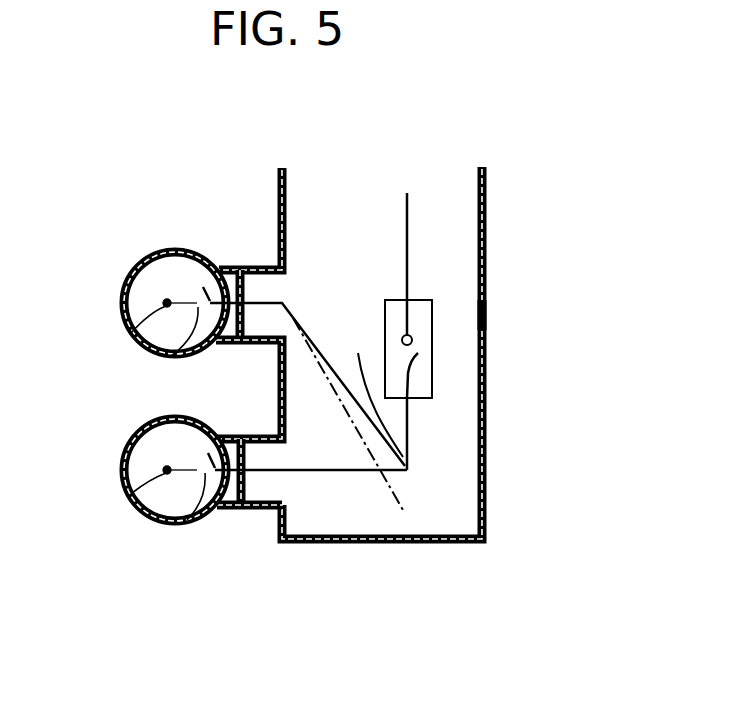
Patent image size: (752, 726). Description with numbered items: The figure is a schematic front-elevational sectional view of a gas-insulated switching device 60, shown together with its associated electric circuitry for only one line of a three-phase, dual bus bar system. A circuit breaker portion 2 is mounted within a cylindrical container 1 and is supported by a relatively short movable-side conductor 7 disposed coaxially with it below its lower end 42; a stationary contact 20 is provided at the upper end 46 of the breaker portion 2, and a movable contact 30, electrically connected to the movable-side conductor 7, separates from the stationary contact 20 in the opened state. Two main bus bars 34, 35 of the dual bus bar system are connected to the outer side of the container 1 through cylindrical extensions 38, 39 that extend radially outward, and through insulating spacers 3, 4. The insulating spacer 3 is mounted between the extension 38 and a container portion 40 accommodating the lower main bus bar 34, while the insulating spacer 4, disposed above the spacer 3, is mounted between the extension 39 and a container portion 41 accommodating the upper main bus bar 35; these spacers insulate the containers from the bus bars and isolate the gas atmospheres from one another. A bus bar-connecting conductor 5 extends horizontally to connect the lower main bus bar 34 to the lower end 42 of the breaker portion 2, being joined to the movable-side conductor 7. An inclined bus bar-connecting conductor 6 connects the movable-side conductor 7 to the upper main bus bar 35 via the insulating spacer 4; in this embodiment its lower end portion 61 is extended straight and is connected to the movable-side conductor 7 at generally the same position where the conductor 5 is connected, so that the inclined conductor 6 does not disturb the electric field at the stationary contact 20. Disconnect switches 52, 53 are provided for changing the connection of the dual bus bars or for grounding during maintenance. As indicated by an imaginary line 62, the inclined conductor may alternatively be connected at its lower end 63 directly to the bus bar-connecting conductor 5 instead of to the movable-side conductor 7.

The cylindrical container 1 is at (487, 228).
The circuit breaker portion 2 is at (432, 352).
The insulating spacer 3 is at (235, 503).
The insulating spacer 4 is at (228, 267).
The bus bar-connecting conductor 5 is at (318, 472).
The bus bar-connecting conductor 6 is at (311, 333).
The movable-side conductor 7 is at (412, 443).
The stationary contact 20 is at (480, 325).
The movable contact 30 is at (413, 365).
The main bus bar 34 is at (132, 503).
The main bus bar 35 is at (125, 328).
The cylindrical extension 38 is at (262, 505).
The cylindrical extension 39 is at (260, 345).
The container portion 40 is at (137, 432).
The container portion 41 is at (136, 265).
The lower end of breaker portion 42 is at (412, 400).
The upper end of breaker portion 46 is at (407, 300).
The disconnect switch 52 is at (187, 520).
The disconnect switch 53 is at (170, 357).
The gas-insulated switching device 60 is at (494, 511).
The lower end portion of bus bar-connecting conductor 61 is at (374, 389).
The imaginary line 62 is at (328, 390).
The lower end of inclined conductor 63 is at (405, 506).